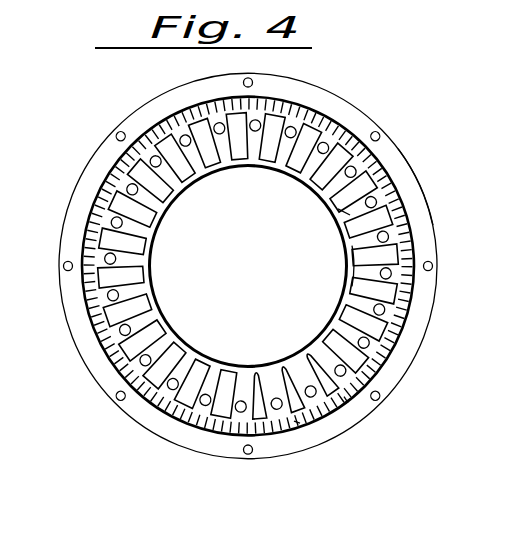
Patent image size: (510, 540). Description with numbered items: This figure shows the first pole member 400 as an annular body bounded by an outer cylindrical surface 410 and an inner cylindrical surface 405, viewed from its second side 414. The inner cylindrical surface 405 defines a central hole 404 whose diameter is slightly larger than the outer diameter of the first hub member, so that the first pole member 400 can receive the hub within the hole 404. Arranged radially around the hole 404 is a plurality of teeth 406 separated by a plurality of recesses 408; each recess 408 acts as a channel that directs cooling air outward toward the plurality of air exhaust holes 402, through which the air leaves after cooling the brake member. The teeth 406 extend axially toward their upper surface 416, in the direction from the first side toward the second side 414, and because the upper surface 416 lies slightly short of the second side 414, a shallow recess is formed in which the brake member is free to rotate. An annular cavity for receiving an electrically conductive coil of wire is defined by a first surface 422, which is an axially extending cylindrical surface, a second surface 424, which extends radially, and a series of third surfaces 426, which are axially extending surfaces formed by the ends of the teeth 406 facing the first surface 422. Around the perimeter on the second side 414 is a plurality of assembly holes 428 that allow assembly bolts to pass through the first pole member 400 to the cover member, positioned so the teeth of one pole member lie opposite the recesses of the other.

The first pole member 400 is at (404, 135).
The air exhaust holes 402 is at (352, 172).
The hole 404 is at (327, 258).
The cylindrical surface 405 is at (343, 330).
The teeth 406 is at (167, 147).
The recesses 408 is at (138, 178).
The outer cylindrical surface 410 is at (350, 101).
The second side 414 is at (420, 232).
The upper surface of the teeth 416 is at (288, 172).
The first surface 422 is at (347, 398).
The second surface 424 is at (297, 425).
The third surfaces 426 is at (313, 372).
The assembly holes 428 is at (253, 82).